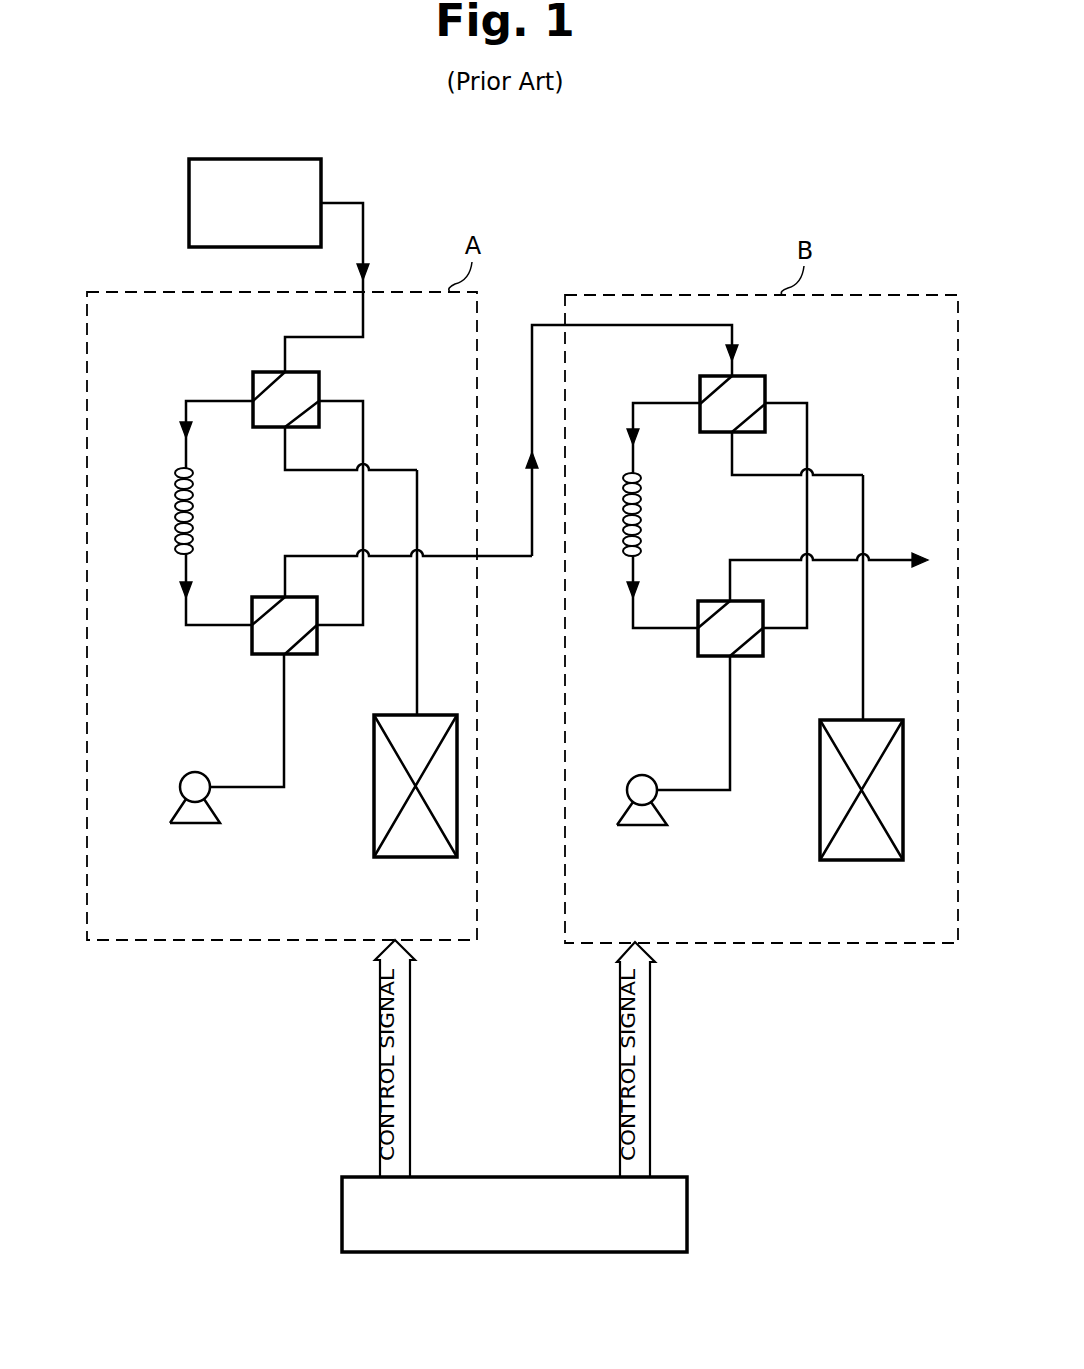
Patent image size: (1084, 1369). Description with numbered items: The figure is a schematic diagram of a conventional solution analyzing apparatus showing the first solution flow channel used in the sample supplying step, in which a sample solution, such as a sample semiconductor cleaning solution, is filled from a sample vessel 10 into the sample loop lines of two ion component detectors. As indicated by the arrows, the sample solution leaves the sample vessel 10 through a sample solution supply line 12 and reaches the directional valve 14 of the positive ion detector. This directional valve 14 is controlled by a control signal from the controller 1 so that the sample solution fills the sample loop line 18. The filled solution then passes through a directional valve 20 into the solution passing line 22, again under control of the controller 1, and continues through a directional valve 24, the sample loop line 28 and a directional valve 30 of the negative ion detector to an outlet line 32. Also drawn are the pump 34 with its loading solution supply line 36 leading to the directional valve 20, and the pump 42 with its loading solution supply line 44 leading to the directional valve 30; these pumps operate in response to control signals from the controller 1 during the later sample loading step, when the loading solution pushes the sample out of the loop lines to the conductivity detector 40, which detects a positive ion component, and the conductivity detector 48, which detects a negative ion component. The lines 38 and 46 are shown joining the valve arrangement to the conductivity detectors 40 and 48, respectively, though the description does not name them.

The controller 1 is at (688, 1213).
The sample vessel 10 is at (321, 170).
The sample solution supply line 12 is at (365, 217).
The directional valve 14 is at (319, 378).
The sample loop line 18 is at (174, 515).
The directional valve 20 is at (252, 644).
The solution passing line 22 is at (530, 490).
The directional valve 24 is at (766, 383).
The sample loop line 28 is at (642, 503).
The directional valve 30 is at (698, 648).
The outlet line 32 is at (896, 558).
The pump 34 is at (178, 802).
The loading solution supply line 36 is at (250, 789).
The first detector line 38 is at (415, 673).
The conductivity detector 40 is at (375, 845).
The pump 42 is at (622, 805).
The loading solution supply line 44 is at (705, 792).
The second detector line 46 is at (860, 620).
The conductivity detector 48 is at (820, 860).